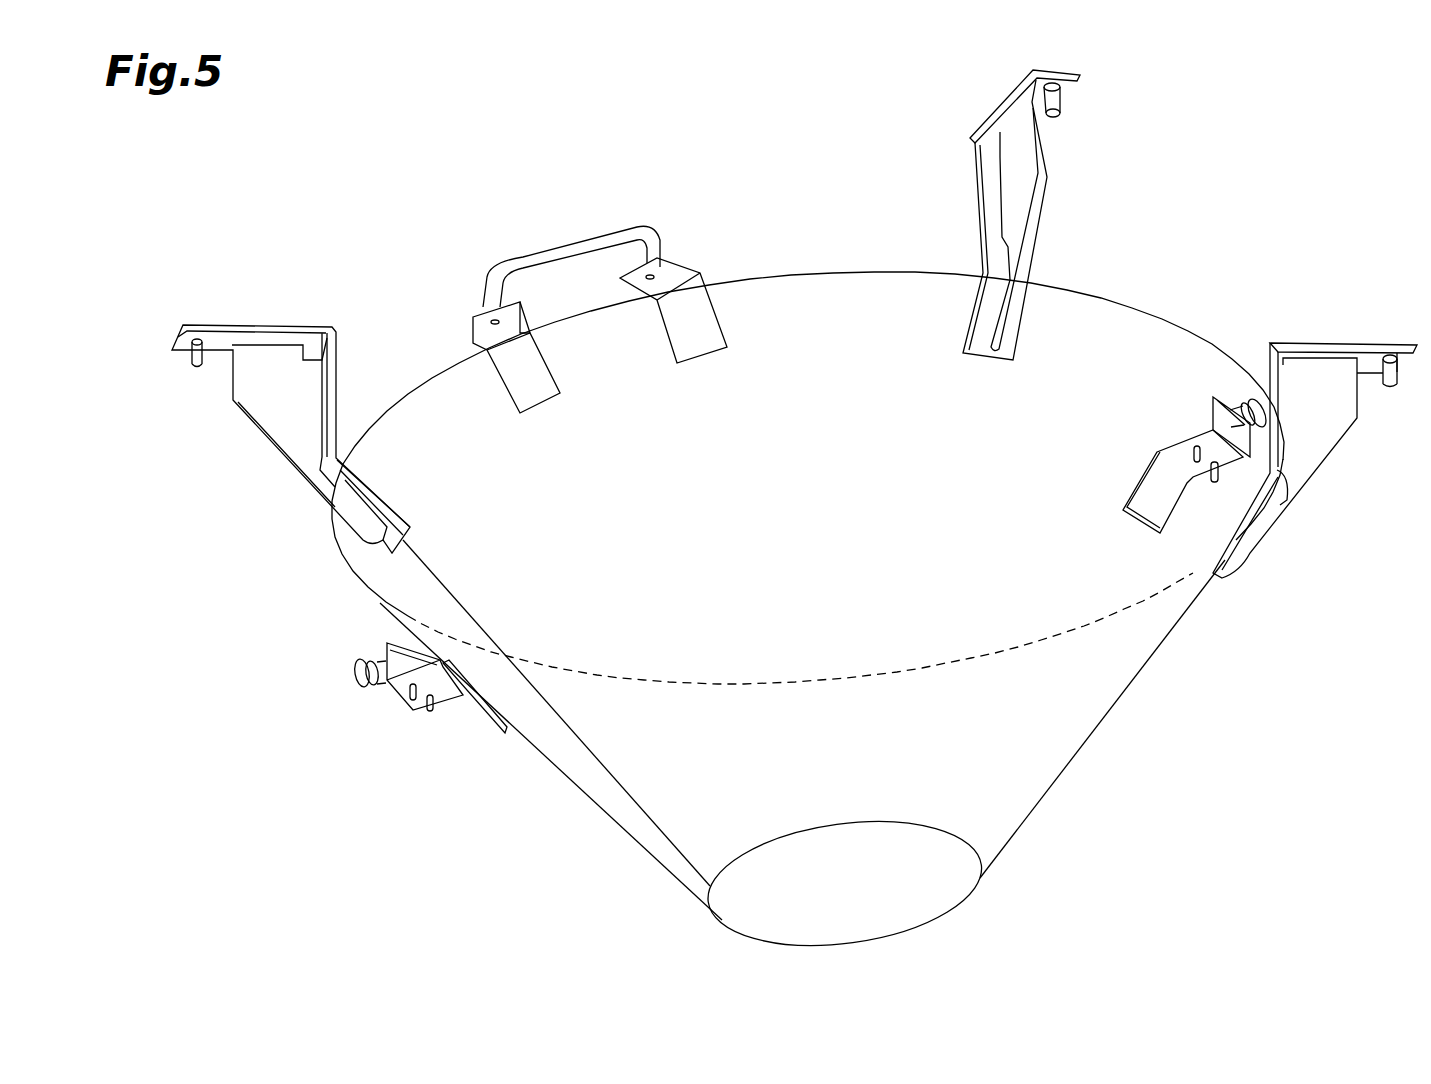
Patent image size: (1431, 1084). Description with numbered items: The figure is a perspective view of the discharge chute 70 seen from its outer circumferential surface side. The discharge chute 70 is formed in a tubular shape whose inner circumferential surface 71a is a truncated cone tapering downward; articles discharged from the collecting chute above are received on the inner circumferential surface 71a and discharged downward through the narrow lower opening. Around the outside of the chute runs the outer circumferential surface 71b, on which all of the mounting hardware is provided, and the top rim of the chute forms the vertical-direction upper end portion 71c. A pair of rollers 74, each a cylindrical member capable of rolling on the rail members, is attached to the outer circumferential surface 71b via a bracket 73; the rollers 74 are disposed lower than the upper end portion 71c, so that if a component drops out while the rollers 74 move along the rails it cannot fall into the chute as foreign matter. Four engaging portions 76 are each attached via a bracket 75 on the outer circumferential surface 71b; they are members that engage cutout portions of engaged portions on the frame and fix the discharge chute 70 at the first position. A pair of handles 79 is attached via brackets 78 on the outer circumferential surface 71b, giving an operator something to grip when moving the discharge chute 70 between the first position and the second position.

The discharge chute 70 is at (600, 140).
The inner circumferential surface 71a is at (818, 312).
The outer circumferential surface 71b is at (996, 808).
The vertical-direction upper end portion 71c is at (1187, 323).
The bracket 73 is at (444, 690).
The roller 74 is at (353, 680).
The bracket 75 is at (207, 325).
The engaging portion 76 is at (192, 360).
The bracket 78 is at (680, 252).
The handle 79 is at (546, 246).